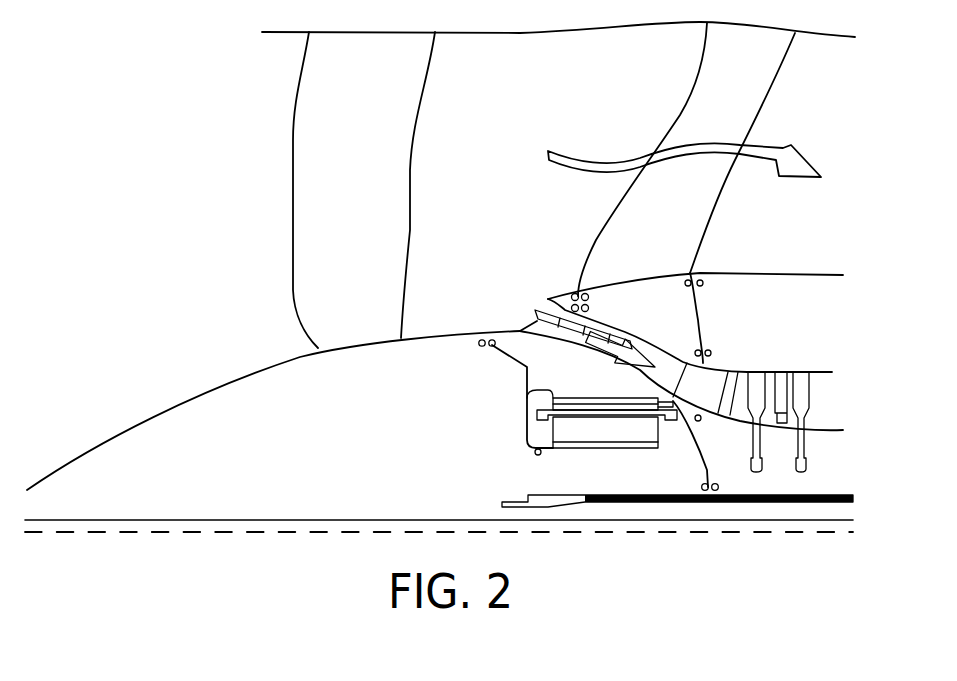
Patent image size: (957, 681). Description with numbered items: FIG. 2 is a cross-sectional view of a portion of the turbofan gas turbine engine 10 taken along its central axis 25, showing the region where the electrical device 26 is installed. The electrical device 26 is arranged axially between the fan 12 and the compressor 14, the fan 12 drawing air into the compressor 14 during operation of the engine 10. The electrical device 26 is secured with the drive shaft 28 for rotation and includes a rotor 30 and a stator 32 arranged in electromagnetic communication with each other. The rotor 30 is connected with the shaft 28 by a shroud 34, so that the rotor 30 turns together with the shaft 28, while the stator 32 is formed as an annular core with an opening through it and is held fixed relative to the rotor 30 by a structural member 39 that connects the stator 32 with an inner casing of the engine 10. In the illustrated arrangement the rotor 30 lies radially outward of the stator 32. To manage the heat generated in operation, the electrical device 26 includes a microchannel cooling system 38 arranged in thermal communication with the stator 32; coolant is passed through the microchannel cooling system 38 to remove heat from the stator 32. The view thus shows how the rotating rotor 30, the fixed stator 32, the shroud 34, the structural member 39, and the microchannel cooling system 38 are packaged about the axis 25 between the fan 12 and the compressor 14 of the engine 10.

The turbofan gas turbine engine 10 is at (86, 180).
The fan 12 is at (283, 166).
The compressor 14 is at (776, 364).
The axis 25 is at (822, 531).
The electrical device 26 is at (540, 372).
The drive shaft 28 is at (824, 492).
The rotor 30 is at (553, 398).
The stator 32 is at (560, 432).
The shroud 34 is at (694, 446).
The microchannel cooling system 38 is at (578, 448).
The structural member 39 is at (500, 366).